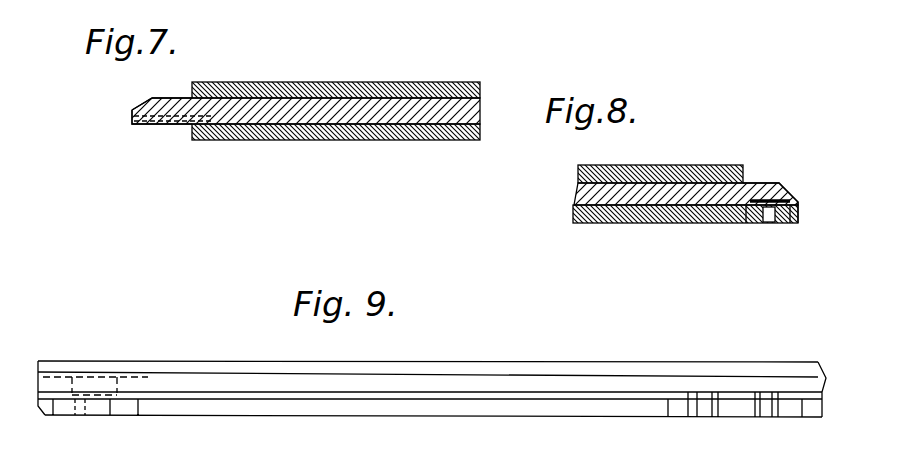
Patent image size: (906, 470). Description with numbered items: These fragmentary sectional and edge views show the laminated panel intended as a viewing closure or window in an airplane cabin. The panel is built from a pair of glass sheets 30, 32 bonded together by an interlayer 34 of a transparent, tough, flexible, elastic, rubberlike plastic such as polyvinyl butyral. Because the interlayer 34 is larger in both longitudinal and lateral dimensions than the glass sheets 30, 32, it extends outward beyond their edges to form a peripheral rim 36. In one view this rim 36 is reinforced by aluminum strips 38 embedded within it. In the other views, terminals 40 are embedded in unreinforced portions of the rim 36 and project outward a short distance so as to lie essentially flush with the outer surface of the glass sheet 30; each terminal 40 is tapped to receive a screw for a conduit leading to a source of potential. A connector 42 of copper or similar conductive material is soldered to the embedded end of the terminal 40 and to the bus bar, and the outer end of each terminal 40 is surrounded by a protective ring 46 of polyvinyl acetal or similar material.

In FIG. 7, the glass sheet 30 is at (295, 140).
In FIG. 8, the glass sheet 30 is at (690, 223).
In FIG. 9, the glass sheet 30 is at (212, 415).
In FIG. 7, the glass sheet 32 is at (292, 84).
In FIG. 8, the glass sheet 32 is at (703, 165).
In FIG. 9, the glass sheet 32 is at (180, 366).
In FIG. 7, the interlayer 34 is at (357, 116).
In FIG. 8, the interlayer 34 is at (686, 194).
In FIG. 9, the interlayer 34 is at (464, 386).
In FIG. 7, the peripheral rim 36 is at (163, 97).
In FIG. 8, the peripheral rim 36 is at (775, 183).
In FIG. 7, the aluminum strips 38 is at (158, 122).
In FIG. 8, the terminals 40 is at (771, 223).
In FIG. 9, the terminals 40 is at (105, 406).
In FIG. 8, the connector 42 is at (751, 198).
In FIG. 9, the connector 42 is at (83, 377).
In FIG. 8, the protective ring 46 is at (785, 224).